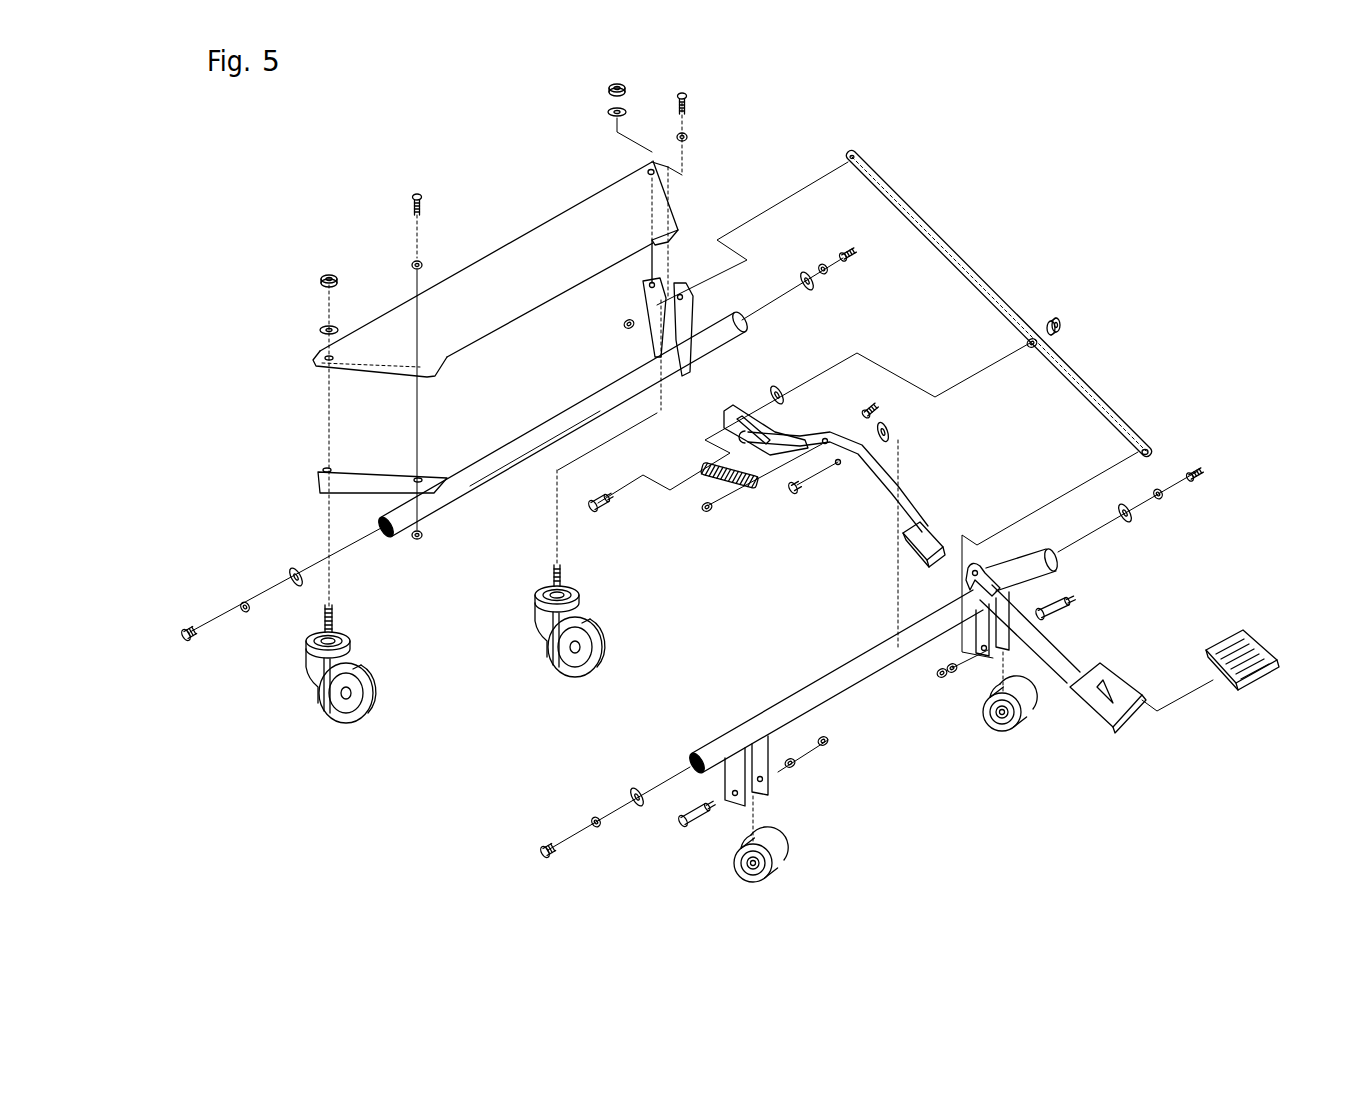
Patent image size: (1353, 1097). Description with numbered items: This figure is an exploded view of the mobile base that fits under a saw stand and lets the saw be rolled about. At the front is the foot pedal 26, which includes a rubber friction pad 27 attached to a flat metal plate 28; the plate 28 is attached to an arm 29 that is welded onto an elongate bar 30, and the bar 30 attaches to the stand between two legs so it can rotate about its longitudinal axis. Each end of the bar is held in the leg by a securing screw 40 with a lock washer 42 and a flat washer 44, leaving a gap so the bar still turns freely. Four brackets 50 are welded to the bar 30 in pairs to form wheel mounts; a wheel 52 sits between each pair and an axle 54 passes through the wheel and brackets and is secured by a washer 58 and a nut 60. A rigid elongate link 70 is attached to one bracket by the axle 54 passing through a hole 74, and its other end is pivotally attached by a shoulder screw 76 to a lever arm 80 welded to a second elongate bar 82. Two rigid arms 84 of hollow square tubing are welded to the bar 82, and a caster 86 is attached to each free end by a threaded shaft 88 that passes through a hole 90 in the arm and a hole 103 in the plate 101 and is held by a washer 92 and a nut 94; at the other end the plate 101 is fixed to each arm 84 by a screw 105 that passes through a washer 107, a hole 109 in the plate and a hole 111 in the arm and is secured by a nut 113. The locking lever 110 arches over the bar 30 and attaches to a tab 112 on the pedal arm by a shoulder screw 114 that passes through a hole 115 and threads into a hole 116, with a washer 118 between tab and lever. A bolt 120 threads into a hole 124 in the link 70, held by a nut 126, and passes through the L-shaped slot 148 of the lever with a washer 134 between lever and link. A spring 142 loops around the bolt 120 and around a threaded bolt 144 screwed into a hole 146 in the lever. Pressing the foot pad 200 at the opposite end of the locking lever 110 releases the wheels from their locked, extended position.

The foot pedal 26 is at (1204, 588).
The rubber friction pad 27 is at (1252, 649).
The flat metal plate 28 is at (1112, 704).
The arm 29 is at (1040, 662).
The elongate bar 30 is at (805, 696).
The securing screw 40 is at (180, 630).
The lock washer 42 is at (240, 603).
The flat washer 44 is at (288, 572).
The brackets 50 is at (736, 776).
The wheel 52 is at (790, 870).
The axle 54 is at (701, 822).
The washer 58 is at (800, 767).
The nut 60 is at (830, 744).
The rigid elongate link 70 is at (935, 241).
The hole 74 is at (1151, 447).
The shoulder screw 76 is at (623, 330).
The lever arm 80 is at (672, 326).
The elongate bar 82 is at (483, 470).
The rigid arms 84 is at (640, 297).
The caster 86 is at (316, 680).
The threaded shaft 88 is at (337, 623).
The holes 90 is at (648, 285).
The washer 92 is at (318, 327).
The nut 94 is at (321, 275).
The plate 101 is at (503, 268).
The hole 103 is at (322, 357).
The screw 105 is at (412, 204).
The washer 107 is at (410, 262).
The hole 109 is at (433, 368).
The locking lever 110 is at (885, 493).
The hole 111 is at (425, 477).
The tab 112 is at (986, 566).
The nut 113 is at (421, 545).
The shoulder screw 114 is at (794, 496).
The hole 115 is at (838, 467).
The hole 116 is at (970, 576).
The washer 118 is at (895, 434).
The bolt 120 is at (606, 514).
The hole 124 is at (1033, 350).
The nut 126 is at (1062, 324).
The washer 134 is at (778, 385).
The spring 142 is at (705, 472).
The threaded bolt 144 is at (871, 407).
The hole 146 is at (824, 437).
The L-shaped slot 148 is at (742, 411).
The foot pad 200 is at (922, 533).